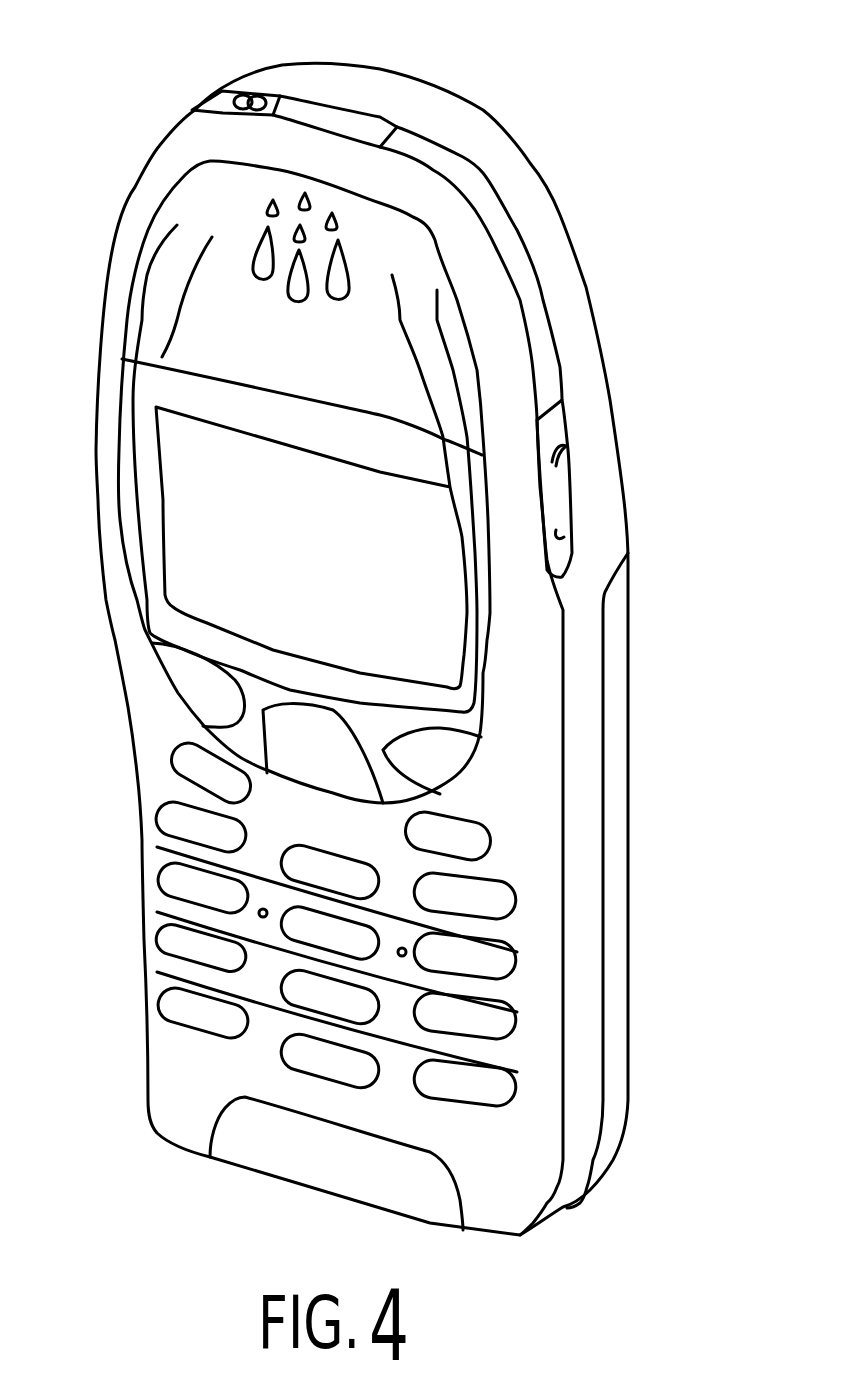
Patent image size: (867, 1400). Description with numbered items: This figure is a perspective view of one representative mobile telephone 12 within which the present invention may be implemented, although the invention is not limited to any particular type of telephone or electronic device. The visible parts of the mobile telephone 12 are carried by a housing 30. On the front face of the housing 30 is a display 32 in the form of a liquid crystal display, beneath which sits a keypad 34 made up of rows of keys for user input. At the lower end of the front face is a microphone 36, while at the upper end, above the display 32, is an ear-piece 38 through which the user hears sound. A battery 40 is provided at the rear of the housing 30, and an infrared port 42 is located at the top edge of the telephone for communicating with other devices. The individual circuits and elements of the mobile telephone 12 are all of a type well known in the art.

The mobile telephone 12 is at (537, 70).
The housing 30 is at (573, 301).
The display 32 is at (430, 612).
The keypad 34 is at (463, 1095).
The microphone 36 is at (245, 1150).
The ear-piece 38 is at (287, 239).
The battery 40 is at (617, 1062).
The infrared port 42 is at (333, 112).